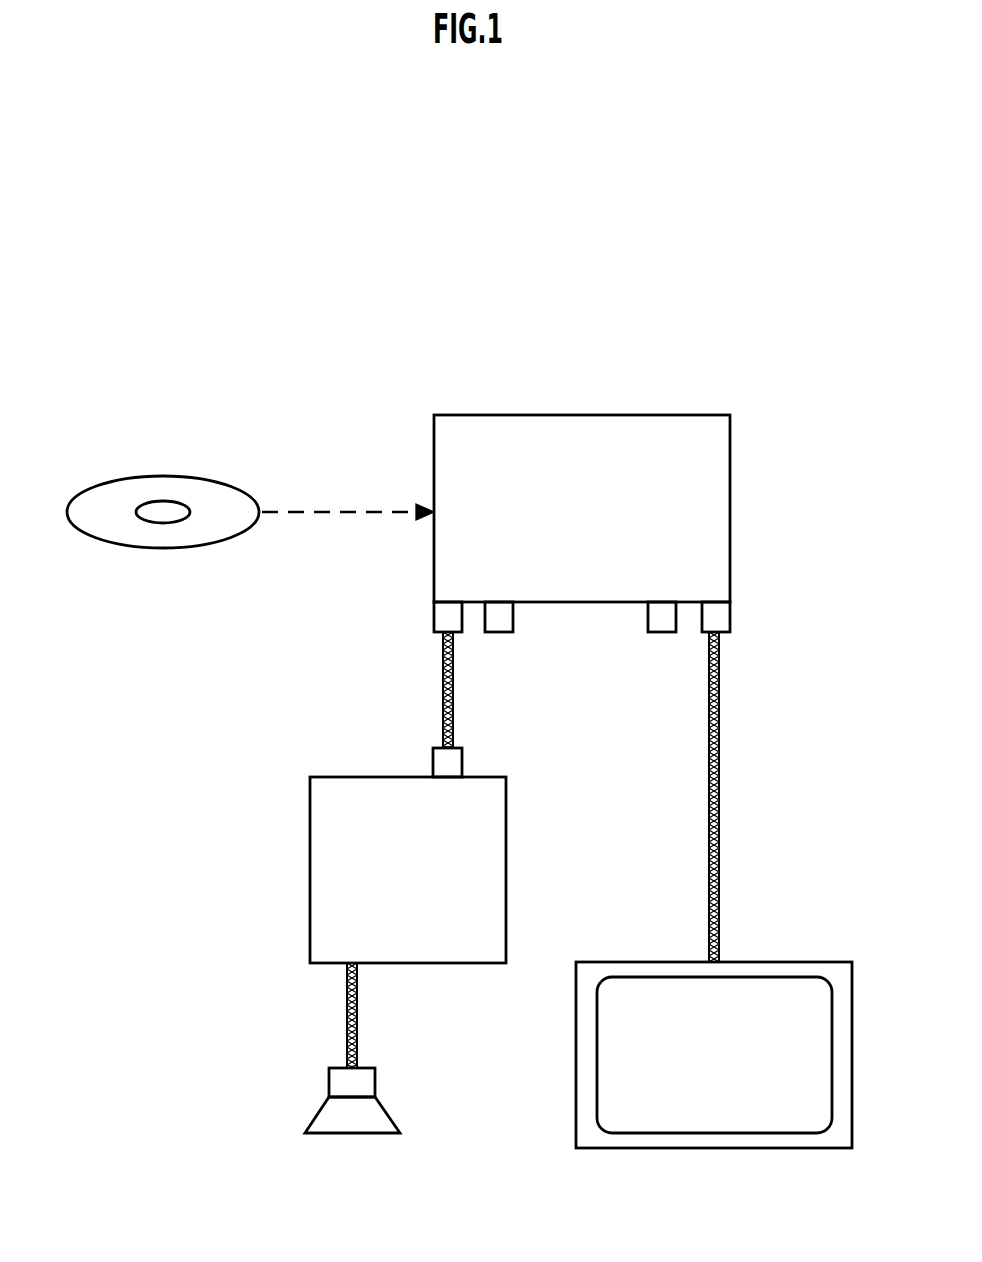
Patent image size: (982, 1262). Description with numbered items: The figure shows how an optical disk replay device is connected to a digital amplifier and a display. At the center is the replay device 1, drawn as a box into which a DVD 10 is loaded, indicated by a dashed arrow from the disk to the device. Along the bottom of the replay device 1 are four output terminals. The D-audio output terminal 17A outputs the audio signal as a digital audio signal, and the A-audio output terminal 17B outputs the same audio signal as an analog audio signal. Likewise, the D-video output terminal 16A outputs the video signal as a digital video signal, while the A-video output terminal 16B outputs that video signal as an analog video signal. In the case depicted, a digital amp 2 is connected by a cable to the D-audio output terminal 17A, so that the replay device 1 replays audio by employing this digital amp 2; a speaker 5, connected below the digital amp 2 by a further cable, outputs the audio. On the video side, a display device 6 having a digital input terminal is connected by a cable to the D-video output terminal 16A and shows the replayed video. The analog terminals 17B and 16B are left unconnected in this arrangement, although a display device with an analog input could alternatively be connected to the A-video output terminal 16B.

The replay device 1 is at (730, 415).
The DVD 10 is at (87, 490).
The digital amp 2 is at (310, 777).
The speaker 5 is at (390, 1113).
The display device 6 is at (852, 962).
The D-audio output terminal 17A is at (432, 618).
The A-audio output terminal 17B is at (503, 632).
The D-video output terminal 16A is at (732, 618).
The A-video output terminal 16B is at (662, 632).